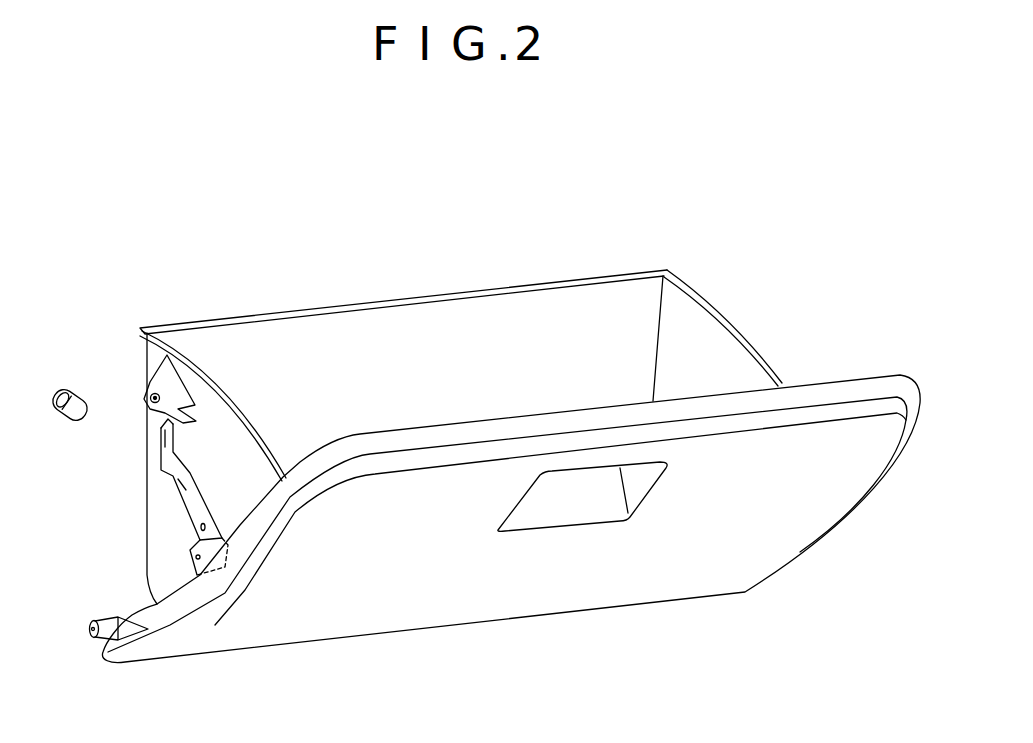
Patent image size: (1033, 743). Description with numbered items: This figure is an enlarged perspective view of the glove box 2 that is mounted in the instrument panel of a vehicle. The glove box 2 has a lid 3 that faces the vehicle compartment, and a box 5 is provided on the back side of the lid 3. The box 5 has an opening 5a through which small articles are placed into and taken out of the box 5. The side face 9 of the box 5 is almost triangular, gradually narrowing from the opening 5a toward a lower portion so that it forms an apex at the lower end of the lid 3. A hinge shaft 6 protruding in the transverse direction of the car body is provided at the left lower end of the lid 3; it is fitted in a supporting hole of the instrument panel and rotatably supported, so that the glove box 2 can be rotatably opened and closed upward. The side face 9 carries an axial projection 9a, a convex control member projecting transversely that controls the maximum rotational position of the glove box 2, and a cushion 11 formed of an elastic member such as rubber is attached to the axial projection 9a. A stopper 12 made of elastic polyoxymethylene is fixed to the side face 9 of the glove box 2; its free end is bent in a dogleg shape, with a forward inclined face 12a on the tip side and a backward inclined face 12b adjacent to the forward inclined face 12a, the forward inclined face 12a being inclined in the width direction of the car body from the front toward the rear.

The glove box 2 is at (767, 321).
The lid 3 is at (507, 600).
The box 5 is at (355, 303).
The opening 5a is at (486, 332).
The hinge shaft 6 is at (112, 623).
The side face 9 is at (228, 423).
The axial projection 9a is at (150, 383).
The cushion 11 is at (56, 392).
The stopper 12 is at (200, 495).
The forward inclined face 12a is at (163, 445).
The backward inclined face 12b is at (177, 473).